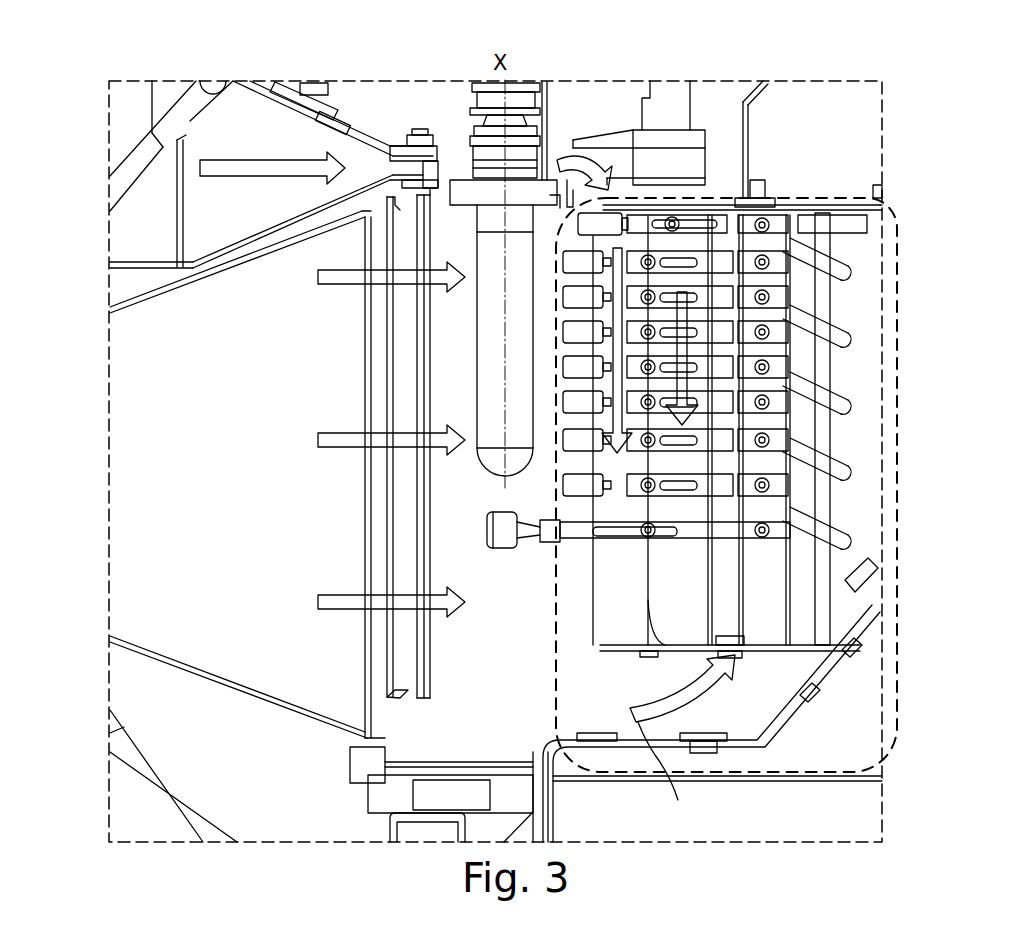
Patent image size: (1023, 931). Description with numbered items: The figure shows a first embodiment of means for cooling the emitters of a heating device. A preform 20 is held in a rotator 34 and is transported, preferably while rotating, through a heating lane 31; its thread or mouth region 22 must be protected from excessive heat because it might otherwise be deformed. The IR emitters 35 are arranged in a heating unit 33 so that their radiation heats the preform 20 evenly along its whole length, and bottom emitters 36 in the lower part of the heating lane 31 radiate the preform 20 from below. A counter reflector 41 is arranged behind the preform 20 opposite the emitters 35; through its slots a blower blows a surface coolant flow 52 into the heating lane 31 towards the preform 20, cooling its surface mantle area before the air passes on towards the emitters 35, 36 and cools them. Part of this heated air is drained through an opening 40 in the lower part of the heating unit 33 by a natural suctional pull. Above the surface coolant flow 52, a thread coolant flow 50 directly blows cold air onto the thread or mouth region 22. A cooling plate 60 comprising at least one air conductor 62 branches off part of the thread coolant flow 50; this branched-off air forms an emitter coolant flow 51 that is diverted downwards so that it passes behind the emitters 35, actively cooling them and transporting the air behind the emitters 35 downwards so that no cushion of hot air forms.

The preform 20 is at (518, 364).
The thread or mouth region 22 is at (470, 158).
The heating lane 31 is at (518, 612).
The heating unit 33 is at (897, 677).
The rotator 34 is at (523, 124).
The emitters 35 is at (578, 485).
The bottom emitters 36 is at (512, 542).
The opening 40 is at (754, 728).
The counter reflector 41 is at (387, 653).
The thread coolant flow 50 is at (272, 158).
The emitter coolant flow 51 is at (566, 152).
The surface coolant flow 52 is at (503, 432).
The cooling plate 60 is at (688, 142).
The air conductor 62 is at (597, 132).